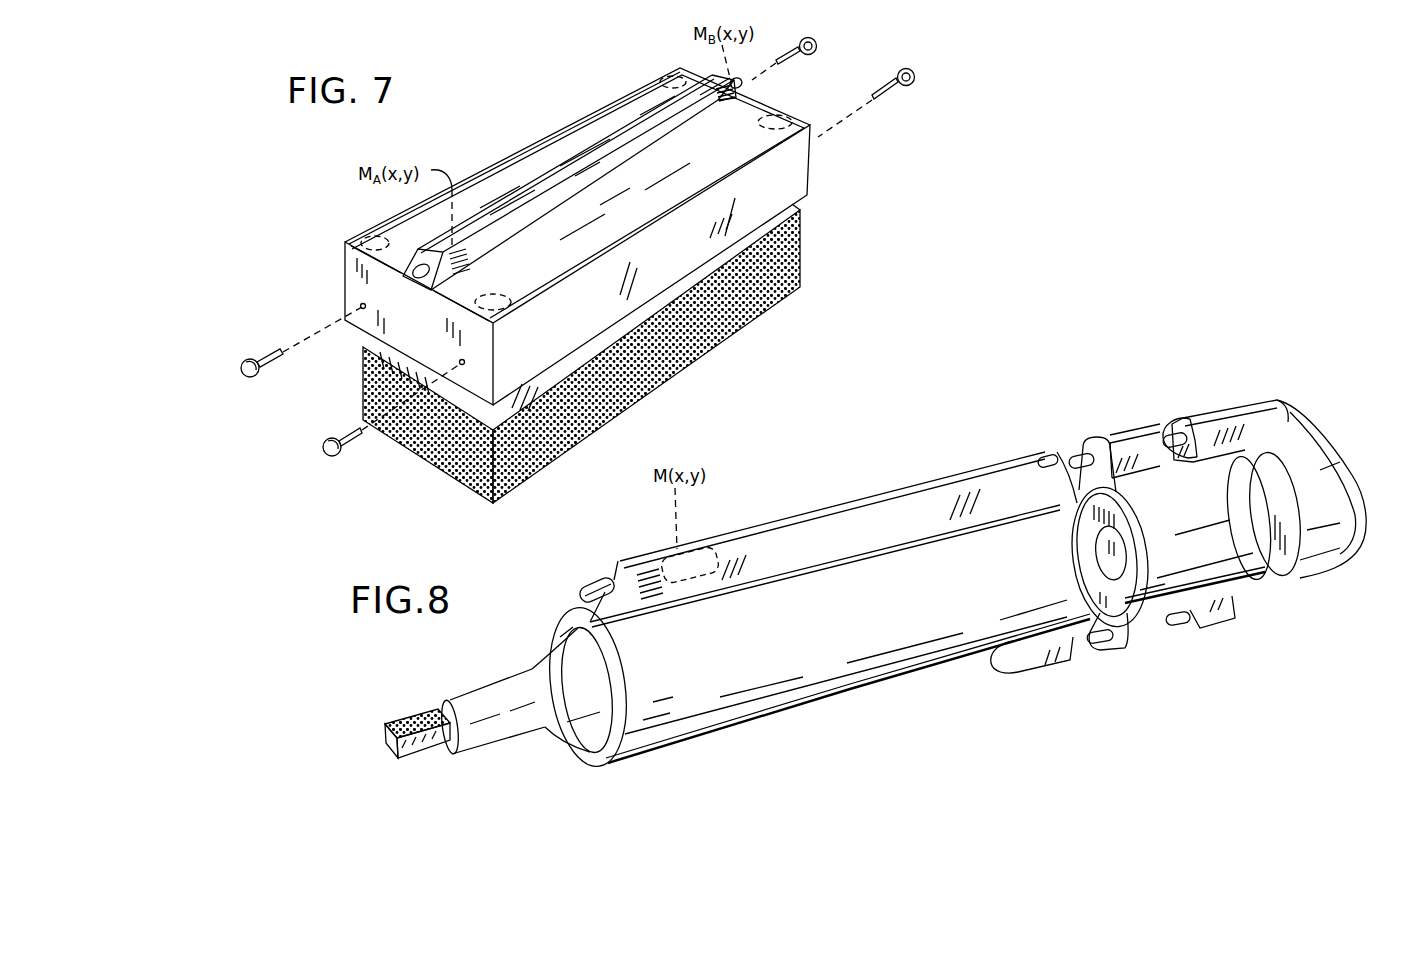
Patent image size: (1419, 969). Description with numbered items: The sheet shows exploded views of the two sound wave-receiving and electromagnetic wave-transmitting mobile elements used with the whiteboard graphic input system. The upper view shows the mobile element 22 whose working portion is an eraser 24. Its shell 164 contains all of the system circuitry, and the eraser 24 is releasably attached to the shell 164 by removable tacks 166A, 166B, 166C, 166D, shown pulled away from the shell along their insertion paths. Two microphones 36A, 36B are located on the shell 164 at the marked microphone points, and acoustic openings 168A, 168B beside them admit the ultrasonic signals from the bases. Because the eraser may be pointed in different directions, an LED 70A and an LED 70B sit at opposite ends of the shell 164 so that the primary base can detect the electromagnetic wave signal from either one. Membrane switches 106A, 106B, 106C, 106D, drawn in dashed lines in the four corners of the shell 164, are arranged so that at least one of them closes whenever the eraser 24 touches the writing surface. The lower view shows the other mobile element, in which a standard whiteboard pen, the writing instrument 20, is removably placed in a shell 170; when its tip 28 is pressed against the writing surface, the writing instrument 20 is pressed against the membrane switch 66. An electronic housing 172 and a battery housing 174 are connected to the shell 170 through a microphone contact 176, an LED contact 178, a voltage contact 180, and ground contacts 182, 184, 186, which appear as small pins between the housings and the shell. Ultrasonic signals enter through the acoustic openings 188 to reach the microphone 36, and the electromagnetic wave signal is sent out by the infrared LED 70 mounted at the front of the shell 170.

In FIG. 7, the mobile element 22 is at (470, 158).
In FIG. 7, the eraser 24 is at (683, 342).
In FIG. 7, the shell 164 is at (422, 203).
In FIG. 7, the acoustic opening 168A is at (474, 245).
In FIG. 7, the acoustic opening 168B is at (723, 81).
In FIG. 7, the LED 70A is at (415, 284).
In FIG. 7, the LED 70B is at (745, 82).
In FIG. 7, the microphone 36A is at (468, 266).
In FIG. 7, the microphone 36B is at (728, 104).
In FIG. 7, the membrane switch 106A is at (660, 80).
In FIG. 7, the membrane switch 106B is at (766, 130).
In FIG. 7, the membrane switch 106C is at (365, 236).
In FIG. 7, the membrane switch 106D is at (514, 312).
In FIG. 7, the removable tack 166A is at (253, 378).
In FIG. 7, the removable tack 166B is at (331, 458).
In FIG. 7, the removable tack 166C is at (817, 45).
In FIG. 7, the removable tack 166D is at (915, 71).
In FIG. 8, the writing instrument 20 is at (557, 667).
In FIG. 8, the tip 28 is at (410, 718).
In FIG. 8, the infrared LED 70 is at (592, 582).
In FIG. 8, the microphone 36 is at (723, 551).
In FIG. 8, the acoustic openings 188 is at (653, 596).
In FIG. 8, the shell 170 is at (973, 607).
In FIG. 8, the microphone contact 176 is at (1038, 459).
In FIG. 8, the LED contact 178 is at (1080, 454).
In FIG. 8, the voltage contact 180 is at (1165, 436).
In FIG. 8, the membrane switch 66 is at (1103, 553).
In FIG. 8, the ground contact 184 is at (1112, 567).
In FIG. 8, the ground contact 182 is at (1093, 645).
In FIG. 8, the ground contact 186 is at (1176, 630).
In FIG. 8, the electronic housing 172 is at (1258, 672).
In FIG. 8, the battery housing 174 is at (1341, 501).